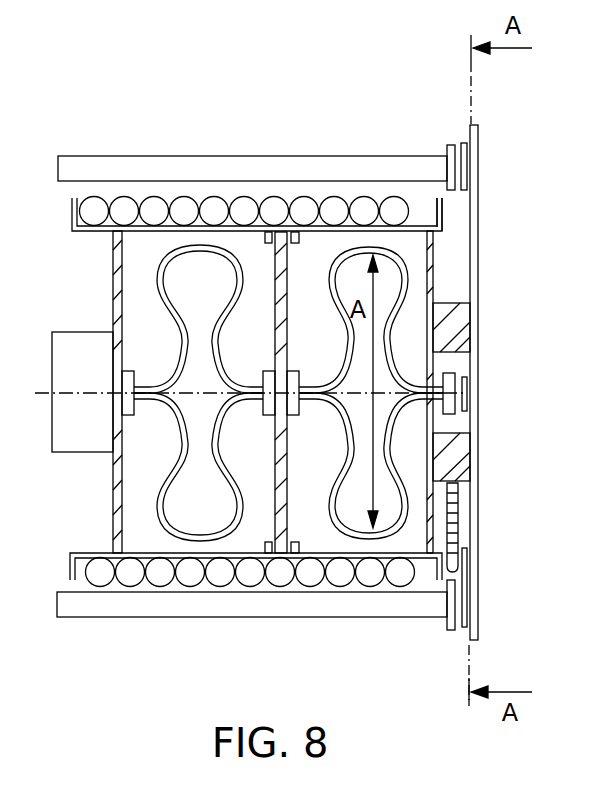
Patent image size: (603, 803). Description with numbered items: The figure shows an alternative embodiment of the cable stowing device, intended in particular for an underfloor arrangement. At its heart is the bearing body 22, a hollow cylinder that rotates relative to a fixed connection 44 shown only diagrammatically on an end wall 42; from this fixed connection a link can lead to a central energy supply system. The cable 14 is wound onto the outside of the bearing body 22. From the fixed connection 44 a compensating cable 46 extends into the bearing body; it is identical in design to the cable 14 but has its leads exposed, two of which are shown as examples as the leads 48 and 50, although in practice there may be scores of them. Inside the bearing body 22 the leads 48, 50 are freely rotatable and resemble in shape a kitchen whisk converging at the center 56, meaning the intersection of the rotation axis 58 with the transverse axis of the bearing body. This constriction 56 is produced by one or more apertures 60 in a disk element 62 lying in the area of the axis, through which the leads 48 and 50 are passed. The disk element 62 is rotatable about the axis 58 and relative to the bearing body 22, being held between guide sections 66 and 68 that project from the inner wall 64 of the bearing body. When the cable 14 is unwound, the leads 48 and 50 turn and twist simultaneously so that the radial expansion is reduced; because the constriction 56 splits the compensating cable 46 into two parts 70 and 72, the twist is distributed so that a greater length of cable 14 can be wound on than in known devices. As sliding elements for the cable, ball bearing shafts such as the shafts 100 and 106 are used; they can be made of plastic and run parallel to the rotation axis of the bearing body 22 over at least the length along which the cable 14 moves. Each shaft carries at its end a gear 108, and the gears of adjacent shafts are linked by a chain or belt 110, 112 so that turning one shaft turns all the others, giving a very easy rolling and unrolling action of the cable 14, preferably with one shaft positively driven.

The cable 14 is at (362, 207).
The bearing body 22 is at (437, 214).
The end wall 42 is at (437, 528).
The fixed connection 44 is at (456, 345).
The compensating cable 46 is at (405, 263).
The lead 48 is at (391, 531).
The lead 50 is at (405, 291).
The center 56 is at (299, 402).
The rotation axis 58 is at (198, 393).
The aperture 60 is at (266, 375).
The disk element 62 is at (286, 297).
The inner wall 64 is at (160, 551).
The guide section 66 is at (258, 553).
The guide section 68 is at (295, 238).
The part of compensating cable 70 is at (408, 240).
The part of compensating cable 72 is at (139, 243).
The ball bearing shaft 100 is at (313, 618).
The ball bearing shaft 106 is at (243, 158).
The gear 108 is at (478, 620).
The chain or belt 110 is at (478, 566).
The chain or belt 112 is at (456, 513).